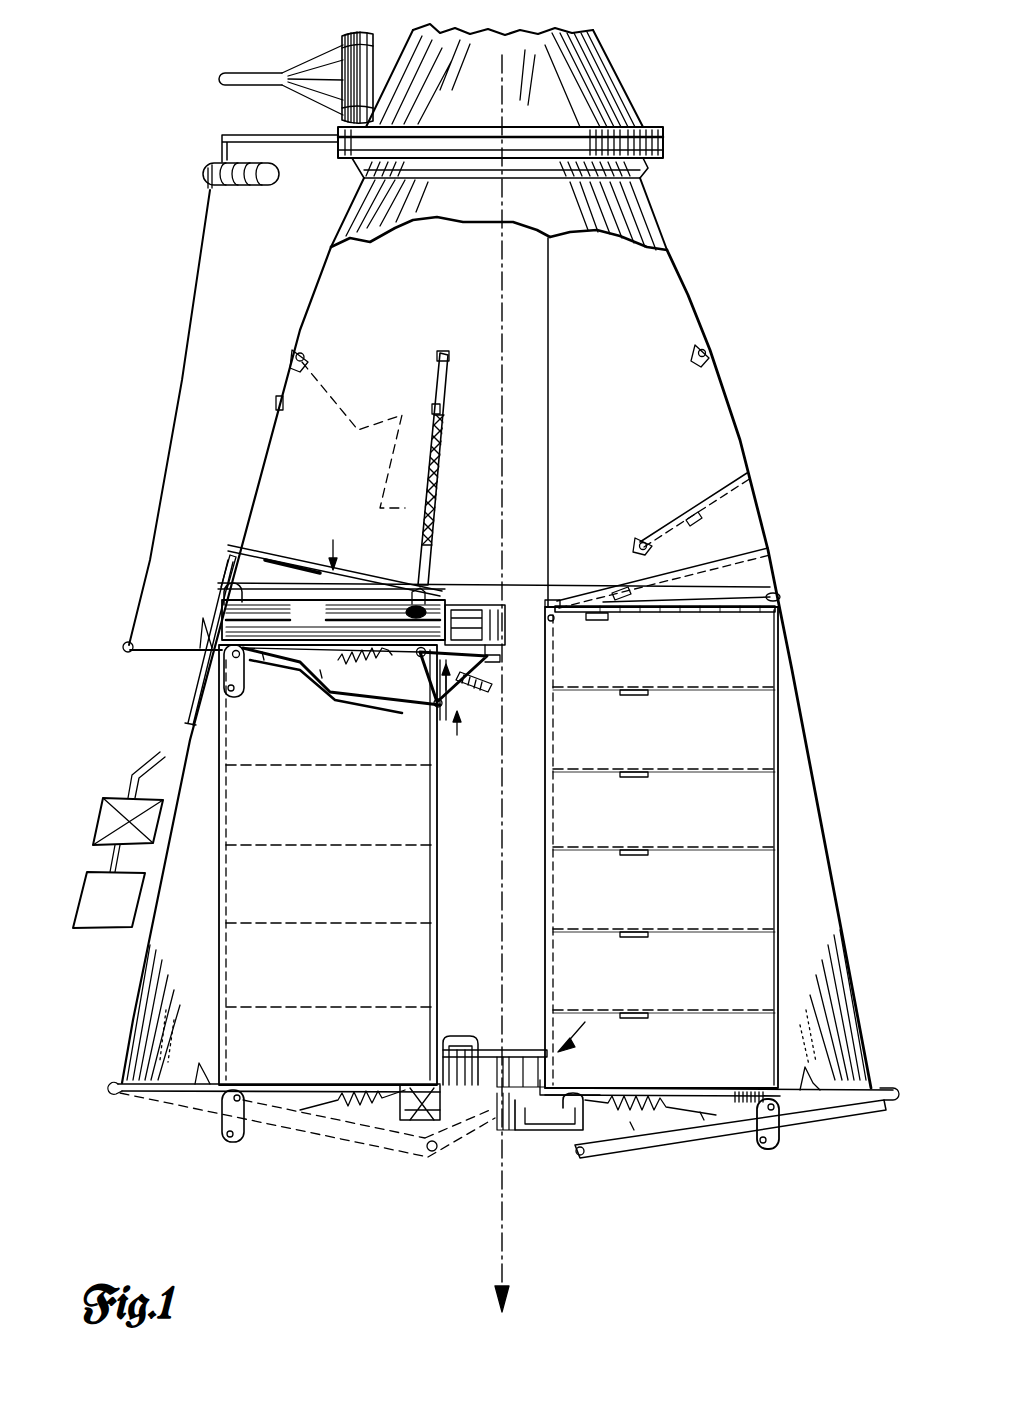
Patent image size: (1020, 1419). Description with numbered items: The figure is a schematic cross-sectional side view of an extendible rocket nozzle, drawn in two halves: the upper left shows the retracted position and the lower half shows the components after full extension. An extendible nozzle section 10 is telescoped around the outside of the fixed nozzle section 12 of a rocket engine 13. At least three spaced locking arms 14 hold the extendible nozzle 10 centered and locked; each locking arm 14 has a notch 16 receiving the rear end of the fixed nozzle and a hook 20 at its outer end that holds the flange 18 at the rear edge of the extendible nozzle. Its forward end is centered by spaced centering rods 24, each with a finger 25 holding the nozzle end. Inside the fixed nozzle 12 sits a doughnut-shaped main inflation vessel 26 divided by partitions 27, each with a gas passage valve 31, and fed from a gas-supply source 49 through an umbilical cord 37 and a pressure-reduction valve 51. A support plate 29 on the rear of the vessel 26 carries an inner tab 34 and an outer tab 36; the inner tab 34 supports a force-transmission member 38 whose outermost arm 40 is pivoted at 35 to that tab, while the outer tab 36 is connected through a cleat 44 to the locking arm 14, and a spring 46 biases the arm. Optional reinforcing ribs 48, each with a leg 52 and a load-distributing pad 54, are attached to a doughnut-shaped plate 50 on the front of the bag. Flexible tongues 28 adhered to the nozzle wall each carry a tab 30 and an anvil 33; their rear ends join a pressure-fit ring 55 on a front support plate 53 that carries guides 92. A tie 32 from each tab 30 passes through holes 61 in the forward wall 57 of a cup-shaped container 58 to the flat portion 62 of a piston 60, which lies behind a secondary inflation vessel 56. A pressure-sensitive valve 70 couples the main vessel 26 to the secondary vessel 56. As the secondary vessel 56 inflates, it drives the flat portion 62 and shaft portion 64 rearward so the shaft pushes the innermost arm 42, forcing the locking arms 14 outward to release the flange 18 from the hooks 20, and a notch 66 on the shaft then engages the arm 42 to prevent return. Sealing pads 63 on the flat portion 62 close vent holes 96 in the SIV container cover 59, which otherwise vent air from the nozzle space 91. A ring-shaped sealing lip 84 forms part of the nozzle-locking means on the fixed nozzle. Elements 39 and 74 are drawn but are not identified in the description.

The extendible nozzle section 10 is at (197, 280).
The fixed nozzle section 12 is at (320, 273).
The rocket engine 13 is at (613, 72).
The locking arm 14 is at (298, 668).
The notch 16 is at (215, 662).
The flange 18 is at (128, 653).
The hook 20 is at (128, 638).
The centering rod 24 is at (226, 79).
The finger 25 is at (222, 136).
The main inflation vessel 26 is at (322, 636).
The partition 27 is at (692, 685).
The tongue 28 is at (725, 475).
The support plate 29 is at (296, 706).
The tab 30 is at (700, 345).
The gas passage valve 31 is at (640, 785).
The tie 32 is at (338, 405).
The anvil 33 is at (432, 410).
The inner tab 34 is at (412, 710).
The pivot 35 is at (430, 692).
The outer tab 36 is at (222, 665).
The umbilical cord 37 is at (190, 722).
The force-transmission member 38 is at (447, 692).
The pin 39 is at (420, 590).
The outermost arm 40 is at (445, 712).
The innermost arm 42 is at (548, 725).
The cleat 44 is at (246, 684).
The spring 46 is at (352, 665).
The reinforcing rib 48 is at (334, 542).
The gas-supply source 49 is at (75, 913).
The doughnut-shaped plate 50 is at (315, 592).
The pressure-reduction valve 51 is at (100, 808).
The leg 52 is at (362, 592).
The front support plate 53 is at (722, 600).
The load-distributing pad 54 is at (232, 545).
The pressure-fit ring 55 is at (781, 597).
The secondary inflation vessel 56 is at (522, 590).
The forward wall 57 is at (450, 1036).
The container 58 is at (585, 1022).
The SIV container cover 59 is at (440, 735).
The piston 60 is at (472, 1097).
The holes 61 is at (512, 1050).
The flat portion 62 is at (472, 605).
The sealing pad 63 is at (562, 1093).
The shaft portion 64 is at (548, 658).
The notch 66 is at (472, 655).
The pressure-sensitive valve 70 is at (415, 1118).
The coil spring 74 is at (212, 170).
The sealing lip 84 is at (222, 585).
The nozzle space 91 is at (535, 287).
The guide 92 is at (612, 1147).
The vent hole 96 is at (460, 722).